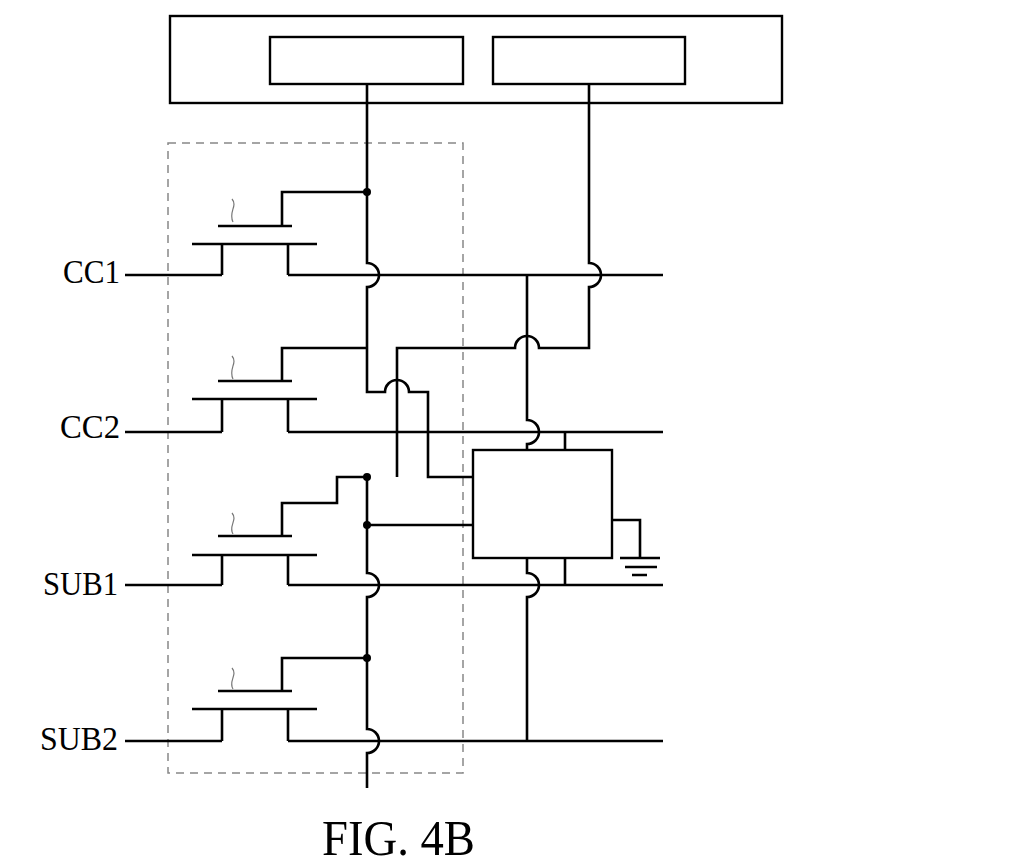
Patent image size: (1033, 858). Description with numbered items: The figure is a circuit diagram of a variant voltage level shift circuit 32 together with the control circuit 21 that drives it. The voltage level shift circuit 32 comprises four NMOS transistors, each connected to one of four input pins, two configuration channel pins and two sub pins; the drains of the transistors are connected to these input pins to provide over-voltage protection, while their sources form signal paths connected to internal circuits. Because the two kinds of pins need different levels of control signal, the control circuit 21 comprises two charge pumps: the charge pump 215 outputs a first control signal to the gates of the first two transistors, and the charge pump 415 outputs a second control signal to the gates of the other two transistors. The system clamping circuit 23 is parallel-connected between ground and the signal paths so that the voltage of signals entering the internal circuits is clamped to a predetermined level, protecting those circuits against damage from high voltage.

The control circuit 21 is at (683, 105).
The charge pump 215 is at (270, 60).
The charge pump 415 is at (686, 61).
The voltage level shift circuit 32 is at (463, 222).
The system clamping circuit 23 is at (614, 474).